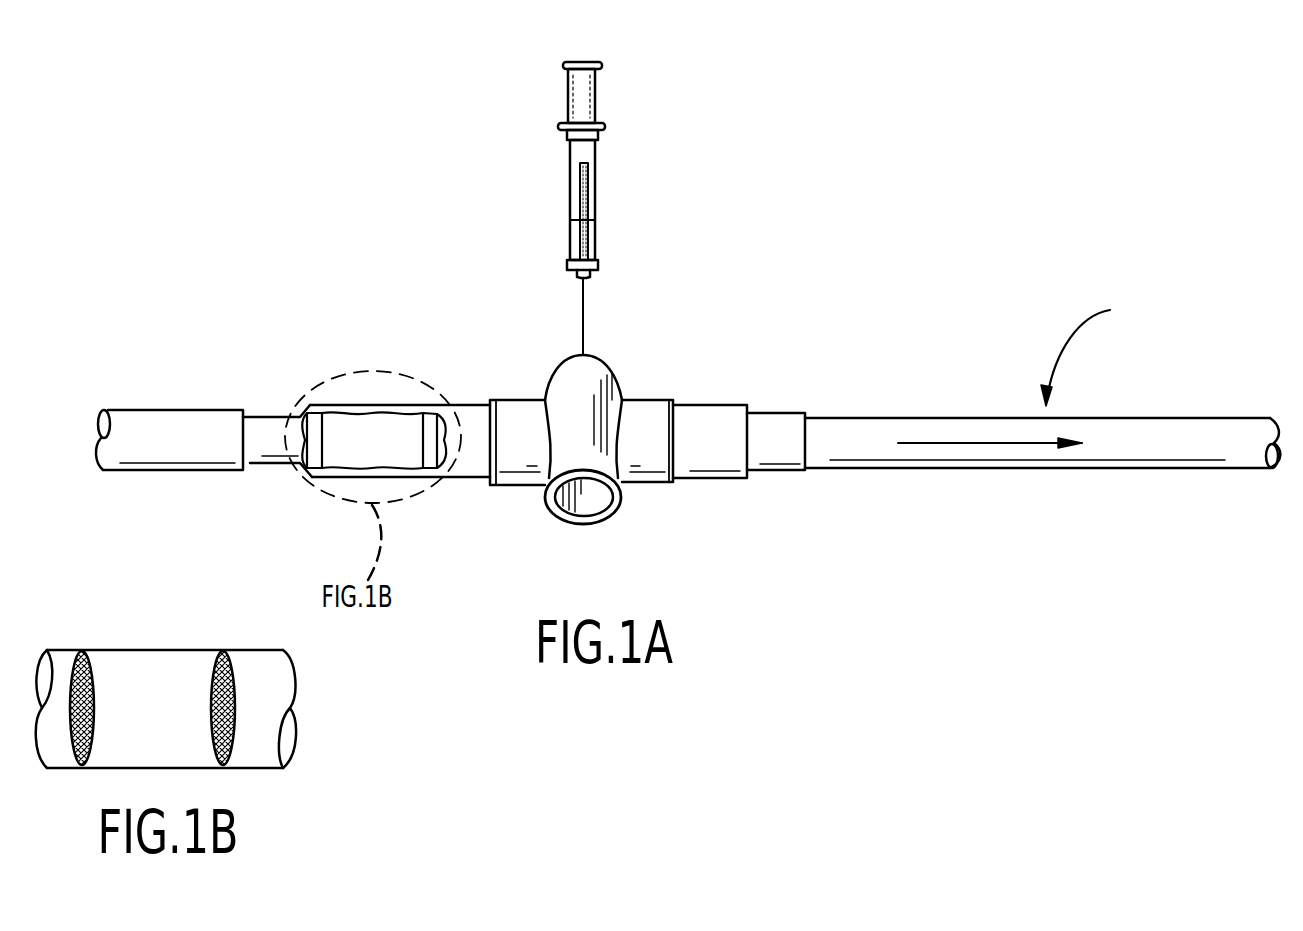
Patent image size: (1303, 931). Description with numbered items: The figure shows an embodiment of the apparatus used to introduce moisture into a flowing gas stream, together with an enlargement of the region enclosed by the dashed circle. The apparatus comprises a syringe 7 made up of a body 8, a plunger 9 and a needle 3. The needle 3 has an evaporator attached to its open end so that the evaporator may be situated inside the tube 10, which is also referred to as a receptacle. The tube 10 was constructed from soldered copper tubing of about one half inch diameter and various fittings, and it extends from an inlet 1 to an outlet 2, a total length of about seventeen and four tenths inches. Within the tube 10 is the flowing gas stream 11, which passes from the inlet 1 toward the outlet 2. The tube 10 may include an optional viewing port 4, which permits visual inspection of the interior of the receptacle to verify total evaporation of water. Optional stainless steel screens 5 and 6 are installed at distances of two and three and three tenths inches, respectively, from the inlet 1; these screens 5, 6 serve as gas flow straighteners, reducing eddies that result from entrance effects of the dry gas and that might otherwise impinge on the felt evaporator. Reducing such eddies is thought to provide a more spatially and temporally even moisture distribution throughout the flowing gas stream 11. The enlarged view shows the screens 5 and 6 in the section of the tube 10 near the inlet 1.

In FIG. 1A, the inlet 1 is at (293, 462).
In FIG. 1A, the outlet 2 is at (976, 464).
In FIG. 1A, the needle 3 is at (583, 317).
In FIG. 1A, the viewing port 4 is at (607, 518).
In FIG. 1A, the stainless steel screen 5 is at (325, 420).
In FIG. 1B, the stainless steel screen 5 is at (90, 656).
In FIG. 1A, the stainless steel screen 6 is at (437, 420).
In FIG. 1B, the stainless steel screen 6 is at (216, 656).
In FIG. 1A, the syringe 7 is at (597, 203).
In FIG. 1A, the body 8 is at (568, 173).
In FIG. 1A, the plunger 9 is at (597, 95).
In FIG. 1A, the tube 10 is at (1092, 348).
In FIG. 1A, the flowing gas stream 11 is at (920, 430).